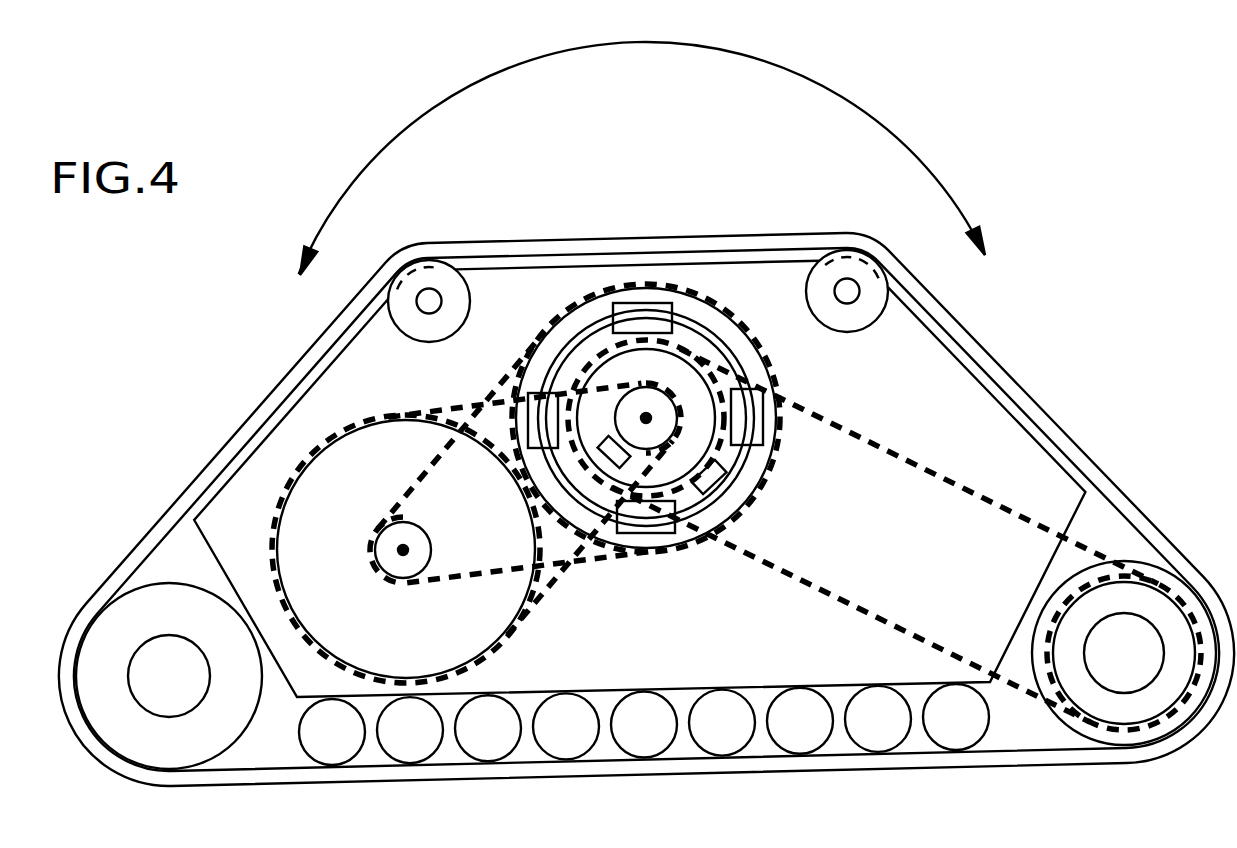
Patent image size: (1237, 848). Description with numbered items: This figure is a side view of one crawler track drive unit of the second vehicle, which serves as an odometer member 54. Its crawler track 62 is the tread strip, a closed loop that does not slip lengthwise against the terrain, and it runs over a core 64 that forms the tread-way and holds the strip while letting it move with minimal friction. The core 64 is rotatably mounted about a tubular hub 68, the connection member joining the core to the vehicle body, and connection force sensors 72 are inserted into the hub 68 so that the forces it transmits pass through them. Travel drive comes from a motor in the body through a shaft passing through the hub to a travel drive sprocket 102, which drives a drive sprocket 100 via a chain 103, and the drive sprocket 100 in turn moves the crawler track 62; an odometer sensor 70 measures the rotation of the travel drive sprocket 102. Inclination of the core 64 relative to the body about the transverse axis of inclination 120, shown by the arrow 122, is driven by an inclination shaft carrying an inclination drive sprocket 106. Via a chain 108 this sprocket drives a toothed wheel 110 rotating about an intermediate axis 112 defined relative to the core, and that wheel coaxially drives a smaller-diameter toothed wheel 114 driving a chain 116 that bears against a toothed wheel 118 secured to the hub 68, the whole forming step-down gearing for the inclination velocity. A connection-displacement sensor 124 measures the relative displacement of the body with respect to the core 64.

The odometer member 54 is at (222, 435).
The crawler track 62 is at (1005, 380).
The core 64 is at (1073, 527).
The tubular hub 68 is at (702, 330).
The odometer sensor 70 is at (722, 463).
The connection force sensors 72 is at (637, 310).
The drive sprocket 100 is at (1057, 637).
The travel drive sprocket 102 is at (723, 380).
The chain 103 is at (862, 430).
The inclination drive sprocket 106 is at (645, 453).
The chain 108 is at (468, 400).
The toothed wheel 110 is at (553, 572).
The intermediate axis 112 is at (400, 552).
The smaller-diameter toothed wheel 114 is at (433, 551).
The chain 116 is at (462, 580).
The toothed wheel 118 is at (540, 495).
The axis of inclination 120 is at (646, 418).
The arrow 122 is at (865, 103).
The connection-displacement sensor 124 is at (645, 453).